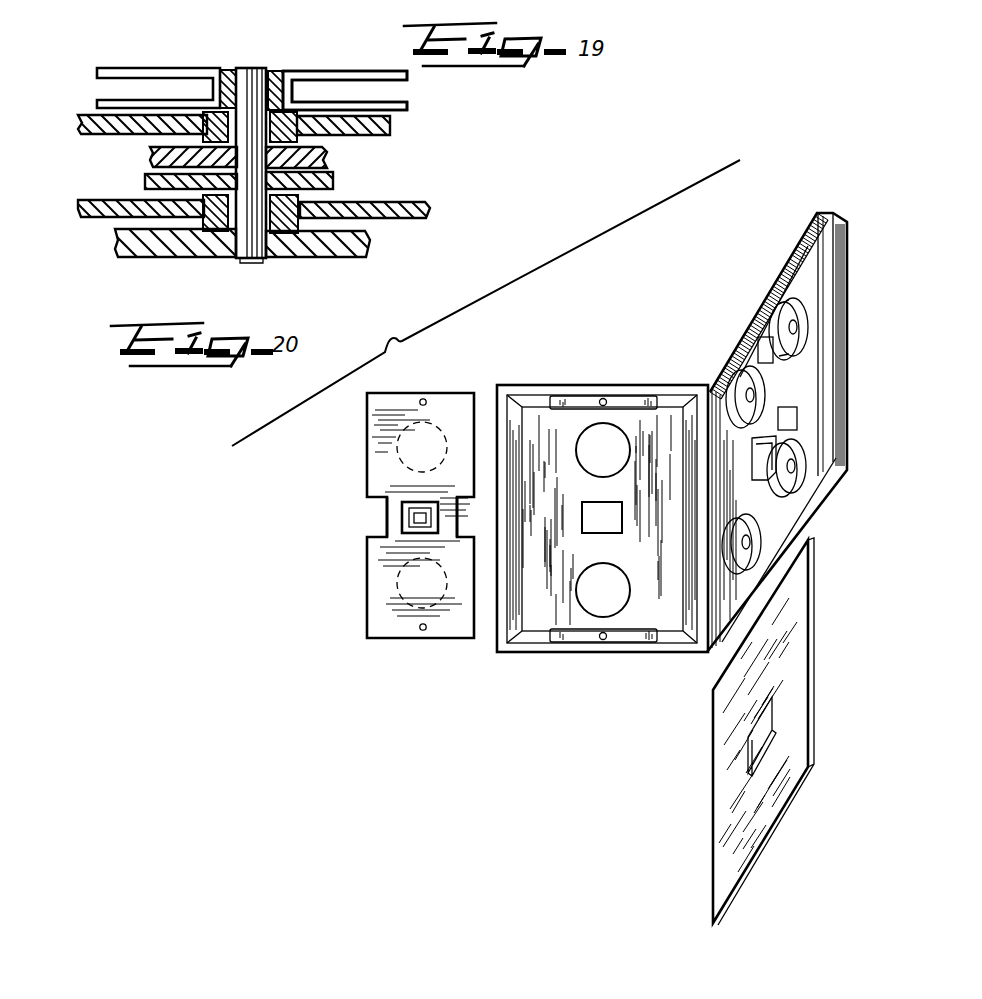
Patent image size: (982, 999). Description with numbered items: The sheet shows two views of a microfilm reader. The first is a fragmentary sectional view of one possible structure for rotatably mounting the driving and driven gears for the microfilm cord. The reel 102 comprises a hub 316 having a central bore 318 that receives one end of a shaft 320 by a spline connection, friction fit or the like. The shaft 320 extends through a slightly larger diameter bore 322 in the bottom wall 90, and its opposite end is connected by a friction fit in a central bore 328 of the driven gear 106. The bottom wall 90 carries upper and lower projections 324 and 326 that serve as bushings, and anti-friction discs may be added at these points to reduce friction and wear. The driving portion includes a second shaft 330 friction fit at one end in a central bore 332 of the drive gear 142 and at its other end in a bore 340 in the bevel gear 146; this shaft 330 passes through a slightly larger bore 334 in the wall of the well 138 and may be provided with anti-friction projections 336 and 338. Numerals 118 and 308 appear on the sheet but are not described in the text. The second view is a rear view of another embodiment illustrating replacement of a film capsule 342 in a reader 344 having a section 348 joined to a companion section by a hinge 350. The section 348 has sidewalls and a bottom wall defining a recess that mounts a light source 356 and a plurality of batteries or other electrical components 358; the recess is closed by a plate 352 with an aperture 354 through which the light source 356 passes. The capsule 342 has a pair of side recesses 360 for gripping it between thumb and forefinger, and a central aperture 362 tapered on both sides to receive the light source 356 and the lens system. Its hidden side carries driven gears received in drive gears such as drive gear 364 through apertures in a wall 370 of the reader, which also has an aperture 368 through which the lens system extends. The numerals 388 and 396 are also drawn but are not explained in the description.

In FIG. 19, the bottom wall 90 is at (392, 131).
In FIG. 19, the reel 102 is at (413, 78).
In FIG. 19, the driven gear 106 is at (330, 158).
In FIG. 19, the frame member 118 is at (160, 7).
In FIG. 19, the well-shaped depression 138 is at (413, 206).
In FIG. 19, the drive gear 142 is at (336, 183).
In FIG. 19, the bevel gear 146 is at (372, 247).
In FIG. 19, the fastener assembly 308 is at (236, 8).
In FIG. 19, the hub 316 is at (293, 82).
In FIG. 19, the central bore 318 is at (242, 78).
In FIG. 19, the shaft 320 is at (242, 88).
In FIG. 19, the bore 322 is at (282, 118).
In FIG. 19, the upper projection 324 is at (199, 122).
In FIG. 19, the lower projection 326 is at (205, 136).
In FIG. 19, the central bore 328 is at (150, 164).
In FIG. 19, the second shaft 330 is at (251, 260).
In FIG. 19, the central bore 332 is at (145, 181).
In FIG. 19, the bore 334 is at (282, 257).
In FIG. 19, the anti-friction projection 336 is at (131, 219).
In FIG. 19, the anti-friction projection 338 is at (180, 258).
In FIG. 19, the bore 340 is at (239, 262).
In FIG. 20, the capsule 342 is at (384, 644).
In FIG. 20, the electrical box 344 is at (698, 569).
In FIG. 20, the reader section 348 is at (818, 509).
In FIG. 20, the hinge 350 is at (705, 655).
In FIG. 20, the plate 352 is at (790, 634).
In FIG. 20, the aperture 354 is at (772, 720).
In FIG. 20, the light source 356 is at (768, 418).
In FIG. 20, the batteries 358 is at (787, 315).
In FIG. 20, the side recess 360 is at (380, 521).
In FIG. 20, the central aperture 362 is at (403, 517).
In FIG. 20, the drive gear 364 is at (591, 458).
In FIG. 20, the aperture 368 is at (620, 528).
In FIG. 20, the wall 370 is at (540, 423).
In FIG. 20, the lower receptacle opening 388 is at (618, 607).
In FIG. 20, the terminal block 396 is at (760, 460).